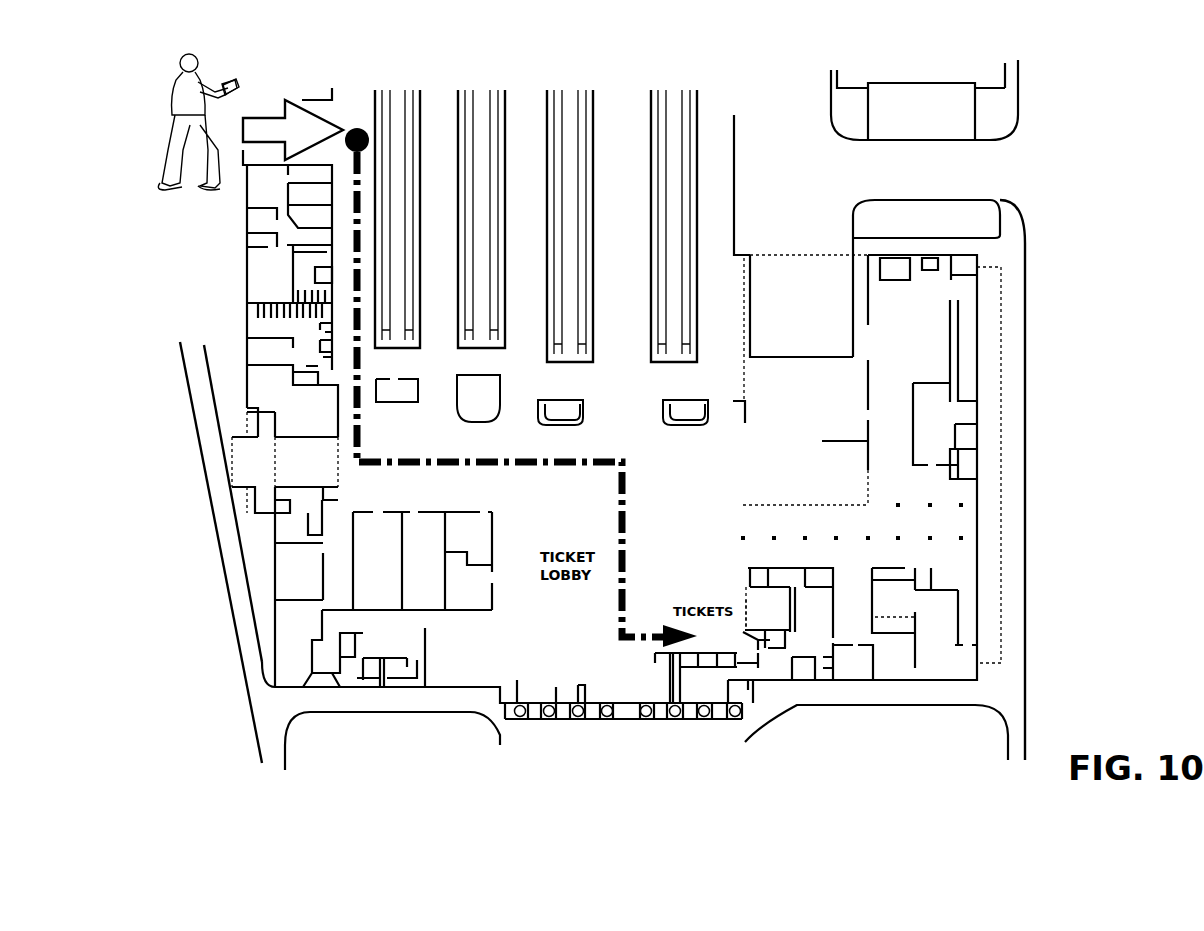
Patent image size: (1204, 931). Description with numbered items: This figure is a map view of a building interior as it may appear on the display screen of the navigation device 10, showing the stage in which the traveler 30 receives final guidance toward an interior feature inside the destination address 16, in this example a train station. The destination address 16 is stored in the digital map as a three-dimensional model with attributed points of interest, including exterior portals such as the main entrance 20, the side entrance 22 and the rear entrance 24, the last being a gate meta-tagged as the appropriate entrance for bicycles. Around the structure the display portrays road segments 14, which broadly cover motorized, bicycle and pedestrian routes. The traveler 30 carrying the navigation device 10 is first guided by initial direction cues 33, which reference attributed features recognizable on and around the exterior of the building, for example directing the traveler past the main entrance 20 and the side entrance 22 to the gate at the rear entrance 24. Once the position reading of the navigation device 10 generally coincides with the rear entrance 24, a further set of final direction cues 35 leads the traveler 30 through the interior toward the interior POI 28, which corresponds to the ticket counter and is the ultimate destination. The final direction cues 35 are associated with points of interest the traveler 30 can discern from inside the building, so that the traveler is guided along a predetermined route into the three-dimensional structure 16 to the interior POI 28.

The navigation device 10 is at (242, 80).
The road segments 14 is at (229, 538).
The destination address 16 is at (1032, 425).
The main entrance 20 is at (998, 203).
The side entrance 22 is at (622, 720).
The rear entrance 24 is at (252, 155).
The interior POI 28 is at (746, 596).
The traveler 30 is at (197, 80).
The initial direction cues 33 is at (293, 124).
The final direction cues 35 is at (377, 440).